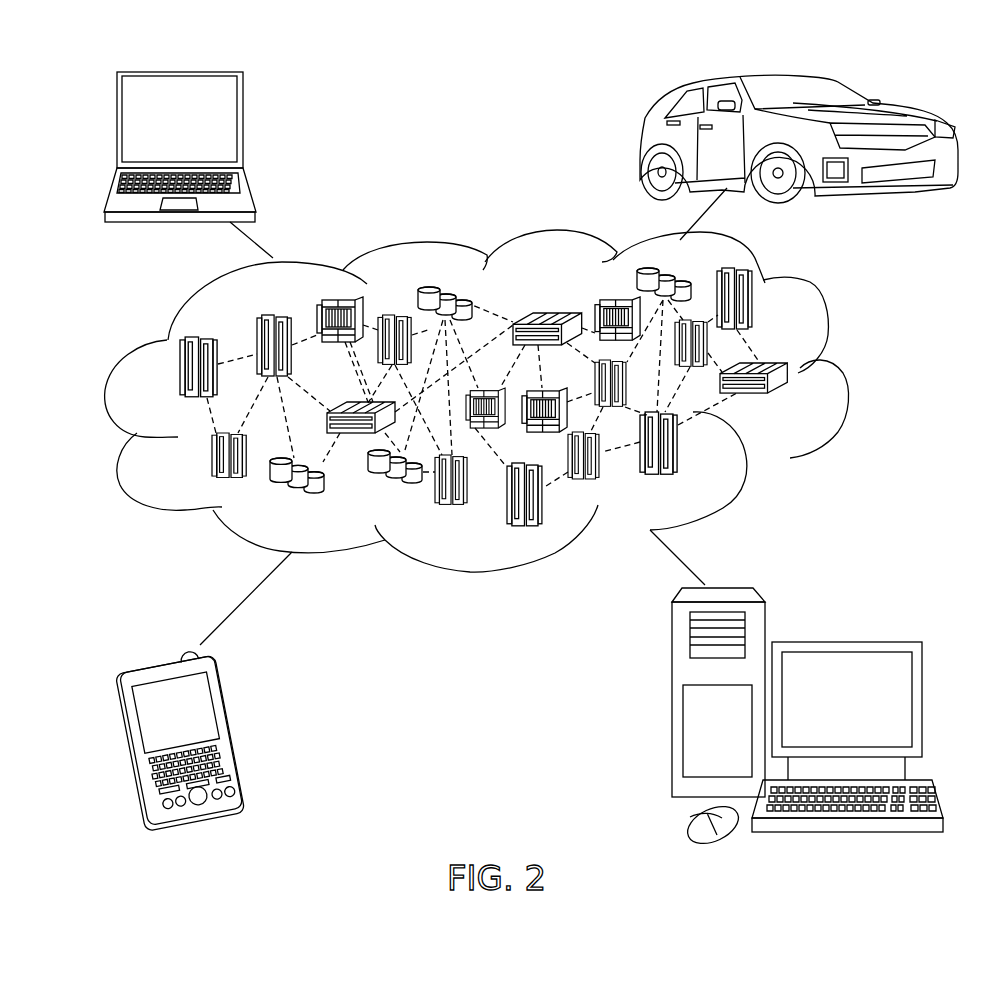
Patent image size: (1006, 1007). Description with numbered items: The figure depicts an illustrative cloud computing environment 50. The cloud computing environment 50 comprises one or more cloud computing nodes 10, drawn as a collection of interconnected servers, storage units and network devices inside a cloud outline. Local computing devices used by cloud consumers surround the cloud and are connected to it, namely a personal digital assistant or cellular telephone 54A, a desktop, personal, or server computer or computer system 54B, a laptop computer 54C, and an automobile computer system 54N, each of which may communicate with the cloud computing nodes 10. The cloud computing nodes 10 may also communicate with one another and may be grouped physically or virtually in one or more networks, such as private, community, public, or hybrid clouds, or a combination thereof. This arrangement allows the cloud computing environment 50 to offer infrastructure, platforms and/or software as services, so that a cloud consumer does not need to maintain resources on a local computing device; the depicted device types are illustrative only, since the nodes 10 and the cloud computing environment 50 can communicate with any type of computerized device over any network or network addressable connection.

The cloud computing nodes 10 is at (802, 408).
The cloud computing environment 50 is at (845, 375).
The personal digital assistant or cellular telephone 54A is at (233, 725).
The desktop, personal, or server computer or computer system 54B is at (842, 642).
The laptop computer 54C is at (244, 123).
The automobile computer system 54N is at (643, 142).